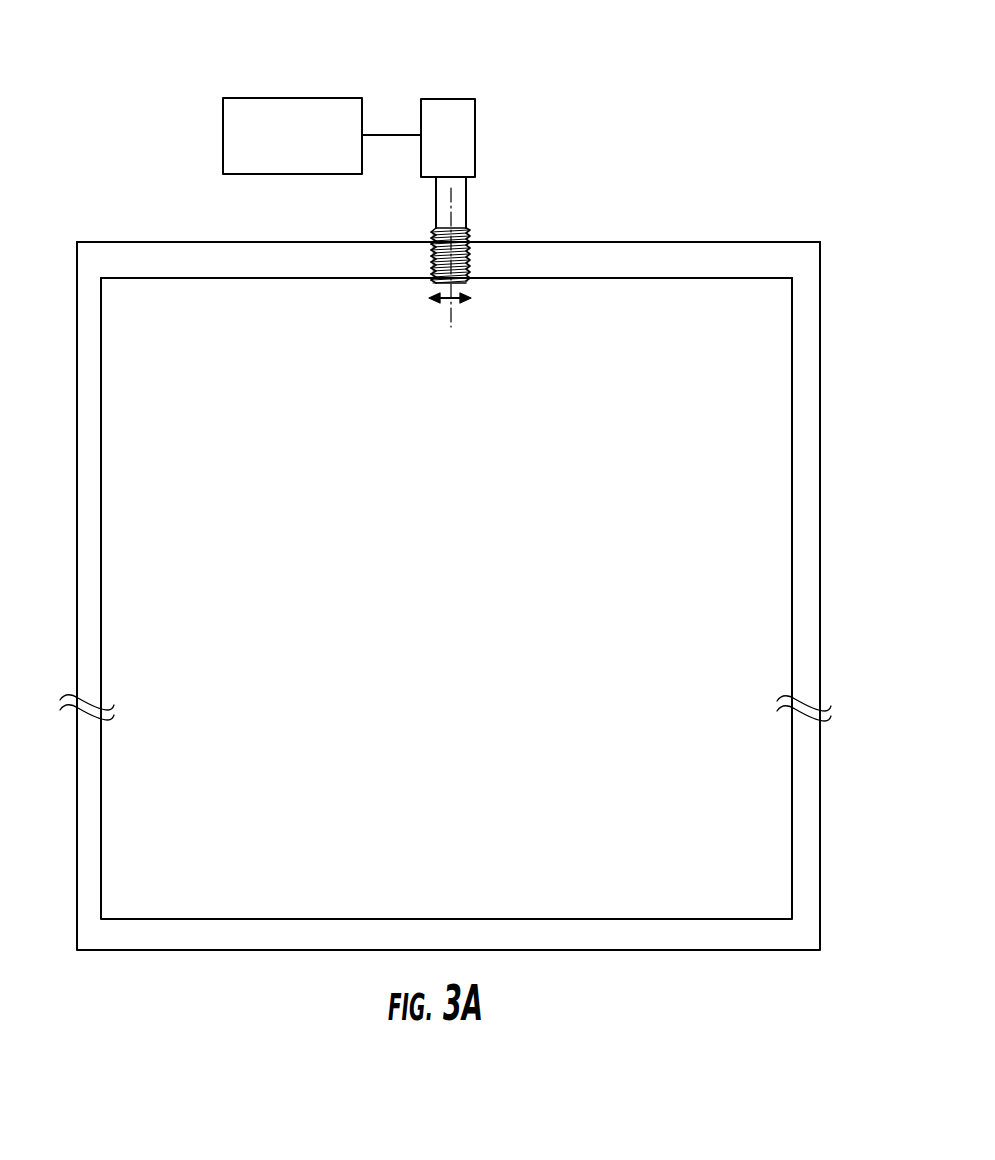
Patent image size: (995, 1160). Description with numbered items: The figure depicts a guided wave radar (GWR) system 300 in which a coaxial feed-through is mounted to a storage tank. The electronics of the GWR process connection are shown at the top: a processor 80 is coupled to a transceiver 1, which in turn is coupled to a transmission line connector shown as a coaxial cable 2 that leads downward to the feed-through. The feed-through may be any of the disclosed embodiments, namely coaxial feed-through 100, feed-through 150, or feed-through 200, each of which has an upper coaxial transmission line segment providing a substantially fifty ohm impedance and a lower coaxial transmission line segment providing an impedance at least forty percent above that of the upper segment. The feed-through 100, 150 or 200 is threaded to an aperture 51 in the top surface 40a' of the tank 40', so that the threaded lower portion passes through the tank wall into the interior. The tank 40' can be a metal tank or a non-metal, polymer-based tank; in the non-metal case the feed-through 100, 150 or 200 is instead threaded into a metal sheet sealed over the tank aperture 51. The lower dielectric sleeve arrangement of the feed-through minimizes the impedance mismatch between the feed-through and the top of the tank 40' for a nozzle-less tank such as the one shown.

The GWR system 300 is at (181, 66).
The processor 80 is at (223, 137).
The transceiver 1 is at (475, 129).
The coaxial cable 2 is at (436, 200).
The tank 40' is at (449, 576).
The top surface 40a' is at (484, 240).
The aperture 51 is at (466, 279).
The coaxial feed-through 100 is at (480, 241).
The feed-through 150 is at (450, 265).
The feed-through 200 is at (450, 265).